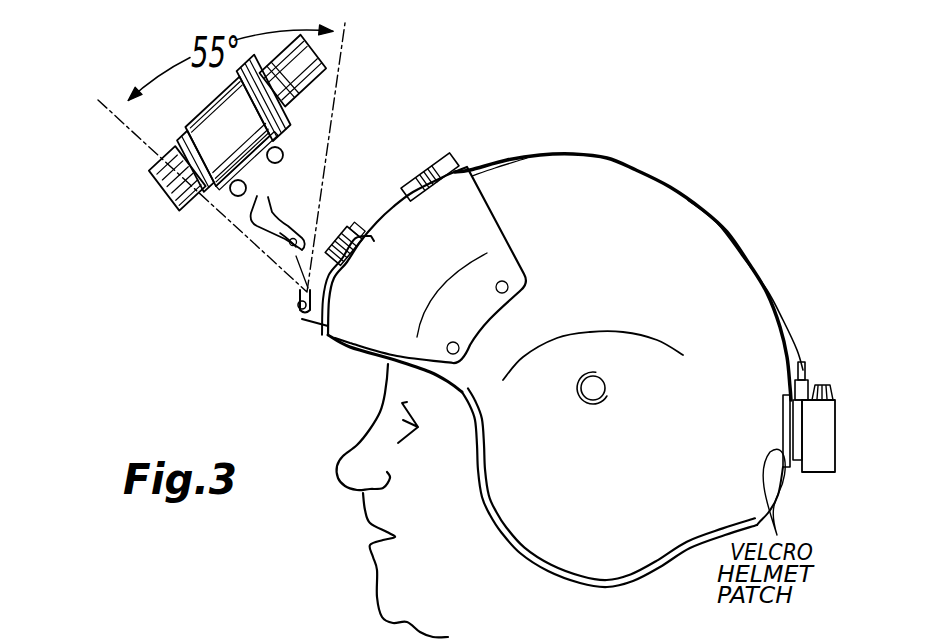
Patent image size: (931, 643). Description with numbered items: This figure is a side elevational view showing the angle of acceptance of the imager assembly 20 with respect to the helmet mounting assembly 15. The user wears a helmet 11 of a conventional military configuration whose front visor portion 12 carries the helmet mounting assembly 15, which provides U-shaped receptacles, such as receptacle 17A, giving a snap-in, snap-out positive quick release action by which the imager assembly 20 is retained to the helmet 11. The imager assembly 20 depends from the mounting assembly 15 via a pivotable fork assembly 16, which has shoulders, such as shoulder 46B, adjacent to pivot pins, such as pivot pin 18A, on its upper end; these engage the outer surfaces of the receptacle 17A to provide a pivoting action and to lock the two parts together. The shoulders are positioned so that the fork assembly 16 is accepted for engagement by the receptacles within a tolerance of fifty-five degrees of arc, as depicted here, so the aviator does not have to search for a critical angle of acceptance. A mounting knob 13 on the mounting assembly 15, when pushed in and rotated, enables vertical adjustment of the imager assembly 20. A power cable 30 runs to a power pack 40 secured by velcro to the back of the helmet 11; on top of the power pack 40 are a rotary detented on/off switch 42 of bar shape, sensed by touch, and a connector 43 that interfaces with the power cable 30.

The helmet 11 is at (594, 181).
The front visor portion 12 is at (478, 214).
The mounting knob 13 is at (360, 213).
The helmet mounting assembly 15 is at (365, 253).
The fork assembly 16 is at (262, 223).
The U-shaped receptacle 17A is at (299, 310).
The pivot pin 18A is at (270, 205).
The imager assembly 20 is at (160, 150).
The power cable 30 is at (770, 277).
The power pack 40 is at (800, 473).
The rotary detented switch 42 is at (822, 374).
The connector 43 is at (803, 361).
The shoulder 46B is at (280, 240).